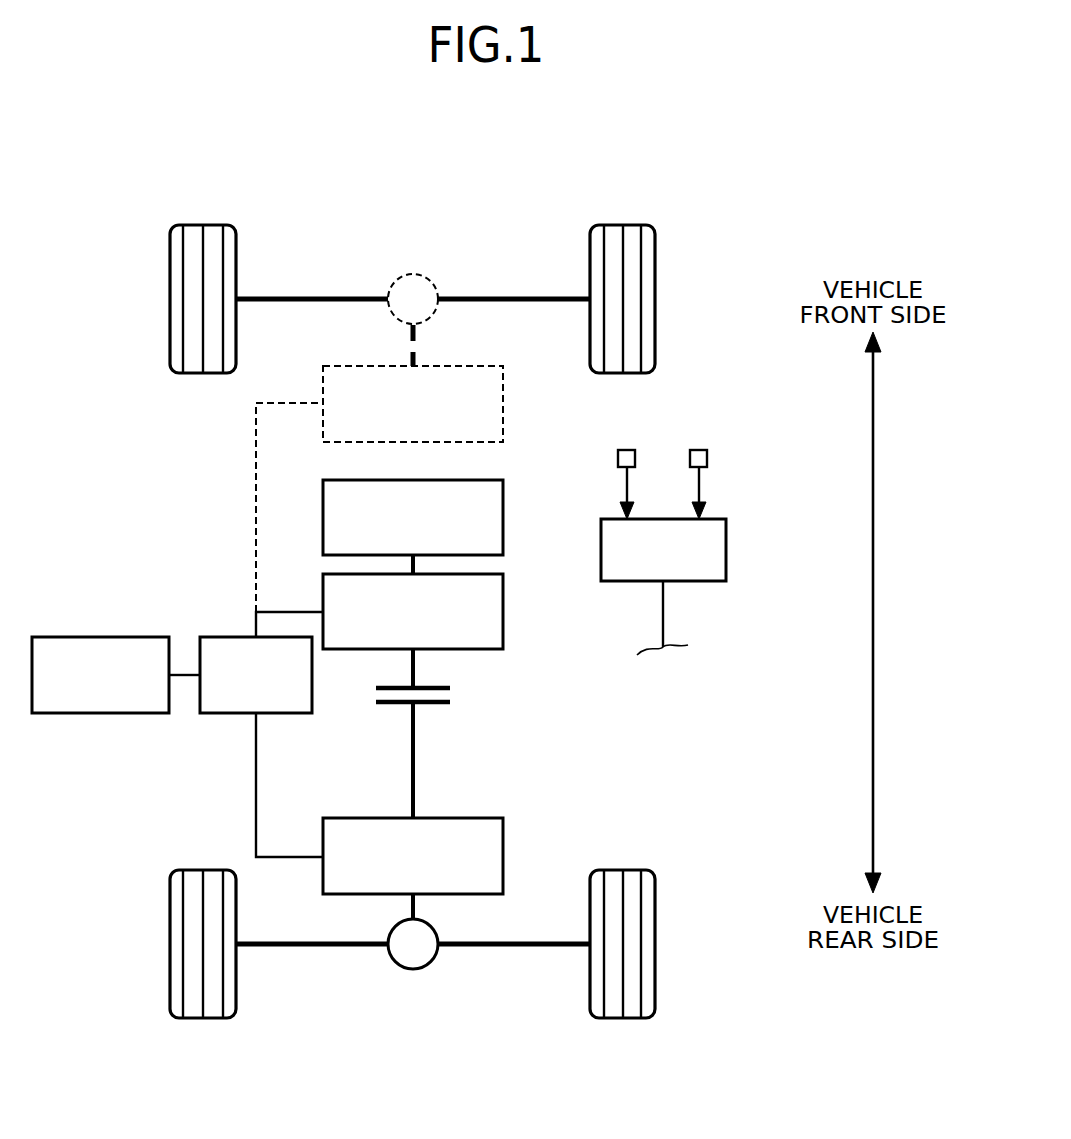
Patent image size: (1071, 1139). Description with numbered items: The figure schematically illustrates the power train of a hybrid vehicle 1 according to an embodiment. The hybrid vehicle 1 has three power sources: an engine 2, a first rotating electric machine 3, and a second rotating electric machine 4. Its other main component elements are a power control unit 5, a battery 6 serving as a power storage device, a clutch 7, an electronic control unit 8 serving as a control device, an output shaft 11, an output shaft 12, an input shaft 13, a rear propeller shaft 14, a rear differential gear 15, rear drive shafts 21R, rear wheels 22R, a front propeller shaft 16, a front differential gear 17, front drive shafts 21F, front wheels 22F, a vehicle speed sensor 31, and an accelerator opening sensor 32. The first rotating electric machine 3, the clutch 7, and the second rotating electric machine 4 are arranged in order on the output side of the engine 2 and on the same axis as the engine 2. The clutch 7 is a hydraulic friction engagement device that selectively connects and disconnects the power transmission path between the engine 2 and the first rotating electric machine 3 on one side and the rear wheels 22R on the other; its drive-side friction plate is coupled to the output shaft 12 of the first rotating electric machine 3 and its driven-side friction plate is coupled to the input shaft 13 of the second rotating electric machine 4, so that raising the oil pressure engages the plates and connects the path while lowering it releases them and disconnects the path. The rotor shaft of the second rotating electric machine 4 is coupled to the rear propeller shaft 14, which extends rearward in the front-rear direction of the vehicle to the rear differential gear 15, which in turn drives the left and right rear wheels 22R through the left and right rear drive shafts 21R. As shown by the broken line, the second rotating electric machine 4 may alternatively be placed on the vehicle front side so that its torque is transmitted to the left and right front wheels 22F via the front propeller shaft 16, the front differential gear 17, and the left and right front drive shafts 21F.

The hybrid vehicle 1 is at (456, 176).
The engine 2 is at (504, 512).
The first rotating electric machine 3 is at (504, 605).
The second rotating electric machine 4 is at (504, 399).
The power control unit 5 is at (229, 636).
The battery 6 is at (80, 636).
The clutch 7 is at (456, 694).
The electronic control unit 8 is at (727, 547).
The output shaft 11 is at (416, 566).
The output shaft 12 is at (416, 668).
The input shaft 13 is at (416, 757).
The rear propeller shaft 14 is at (416, 906).
The rear differential gear 15 is at (413, 970).
The front propeller shaft 16 is at (418, 357).
The front differential gear 17 is at (413, 273).
The front drive shafts 21F is at (311, 296).
The rear drive shafts 21R is at (311, 947).
The front wheels 22F is at (202, 224).
The rear wheels 22R is at (201, 1020).
The vehicle speed sensor 31 is at (627, 449).
The accelerator opening sensor 32 is at (699, 449).